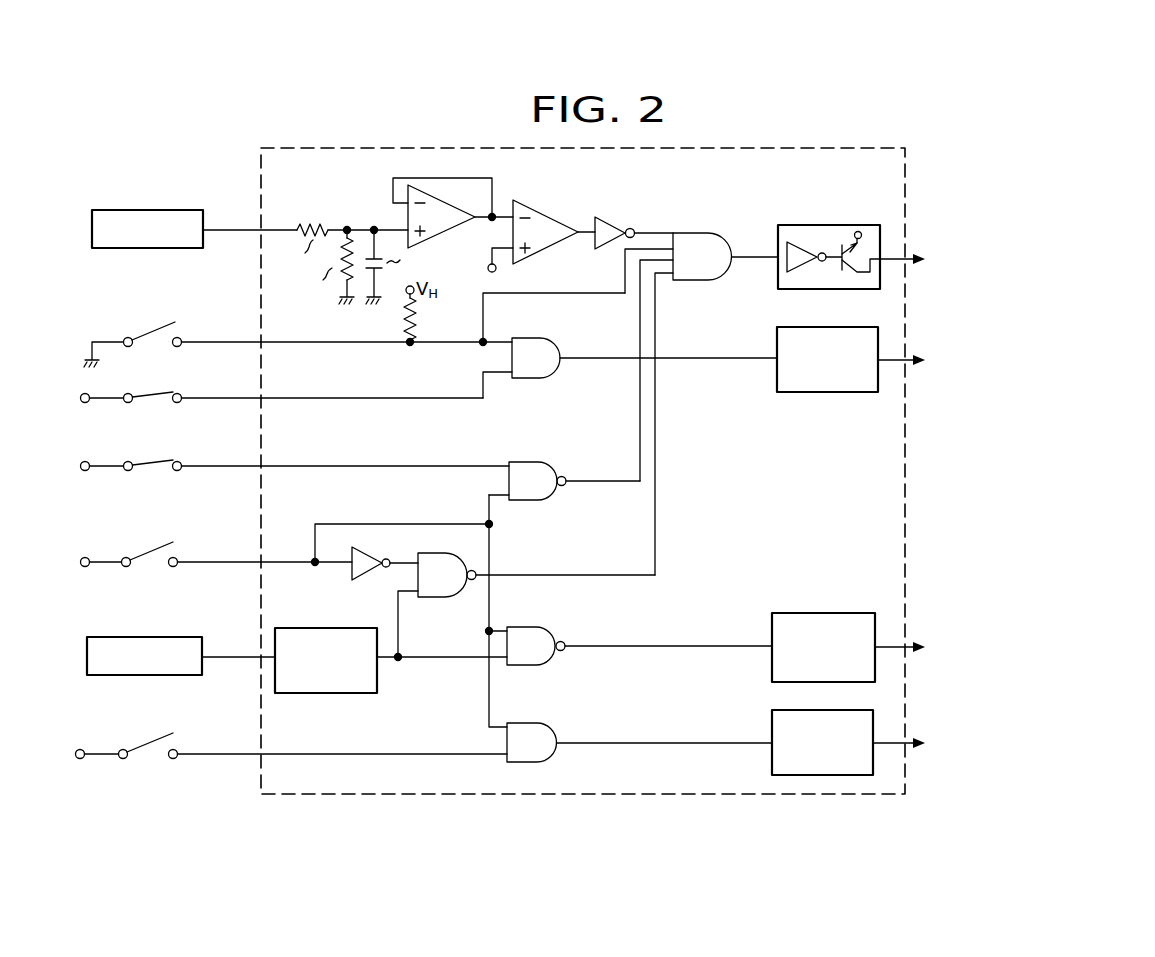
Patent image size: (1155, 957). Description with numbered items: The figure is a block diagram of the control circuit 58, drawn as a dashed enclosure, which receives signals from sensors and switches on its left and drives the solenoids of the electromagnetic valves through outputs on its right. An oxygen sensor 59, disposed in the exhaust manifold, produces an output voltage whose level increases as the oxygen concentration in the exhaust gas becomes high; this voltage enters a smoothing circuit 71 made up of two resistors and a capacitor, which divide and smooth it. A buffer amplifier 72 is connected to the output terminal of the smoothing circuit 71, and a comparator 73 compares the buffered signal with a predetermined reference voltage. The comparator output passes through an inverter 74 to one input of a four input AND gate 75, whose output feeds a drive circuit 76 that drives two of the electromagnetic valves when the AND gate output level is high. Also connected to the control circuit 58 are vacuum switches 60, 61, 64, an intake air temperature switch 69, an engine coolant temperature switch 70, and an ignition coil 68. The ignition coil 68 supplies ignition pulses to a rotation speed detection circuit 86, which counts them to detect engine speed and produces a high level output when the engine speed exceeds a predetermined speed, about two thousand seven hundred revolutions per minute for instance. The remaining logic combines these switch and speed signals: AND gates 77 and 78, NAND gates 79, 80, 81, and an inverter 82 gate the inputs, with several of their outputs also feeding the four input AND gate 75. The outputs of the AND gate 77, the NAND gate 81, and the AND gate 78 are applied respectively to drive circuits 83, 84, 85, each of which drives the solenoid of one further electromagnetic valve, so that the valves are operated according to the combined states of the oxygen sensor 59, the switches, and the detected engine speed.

The control circuit 58 is at (495, 795).
The oxygen sensor 59 is at (92, 237).
The vacuum switch 60 is at (149, 393).
The vacuum switch 61 is at (149, 459).
The vacuum switch 64 is at (148, 540).
The ignition coil 68 is at (150, 637).
The intake air temperature switch 69 is at (152, 329).
The engine coolant temperature switch 70 is at (142, 740).
The smoothing circuit 71 is at (349, 218).
The buffer amplifier 72 is at (440, 235).
The comparator 73 is at (530, 210).
The inverter 74 is at (605, 216).
The four input AND gate 75 is at (707, 233).
The drive circuit 76 is at (835, 225).
The AND gate 77 is at (552, 340).
The AND gate 78 is at (553, 727).
The NAND gate 79 is at (552, 464).
The NAND gate 80 is at (436, 599).
The NAND gate 81 is at (550, 630).
The inverter 82 is at (363, 581).
The drive circuit 83 is at (812, 393).
The drive circuit 84 is at (812, 613).
The drive circuit 85 is at (772, 767).
The rotation speed detection circuit 86 is at (365, 697).